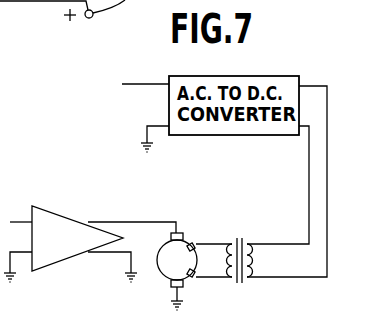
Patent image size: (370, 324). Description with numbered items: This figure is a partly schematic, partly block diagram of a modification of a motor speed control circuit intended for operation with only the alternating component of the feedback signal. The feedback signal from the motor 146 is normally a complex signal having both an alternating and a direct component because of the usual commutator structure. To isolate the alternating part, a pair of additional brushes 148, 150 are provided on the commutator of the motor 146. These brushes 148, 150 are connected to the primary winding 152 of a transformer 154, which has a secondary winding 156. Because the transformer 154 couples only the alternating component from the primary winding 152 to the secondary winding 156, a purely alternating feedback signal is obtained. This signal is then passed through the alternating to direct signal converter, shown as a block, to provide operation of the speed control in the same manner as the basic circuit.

The motor 146 is at (165, 276).
The additional brush 148 is at (192, 243).
The additional brush 150 is at (191, 279).
The primary winding 152 is at (230, 278).
The transformer 154 is at (252, 234).
The secondary winding 156 is at (257, 273).